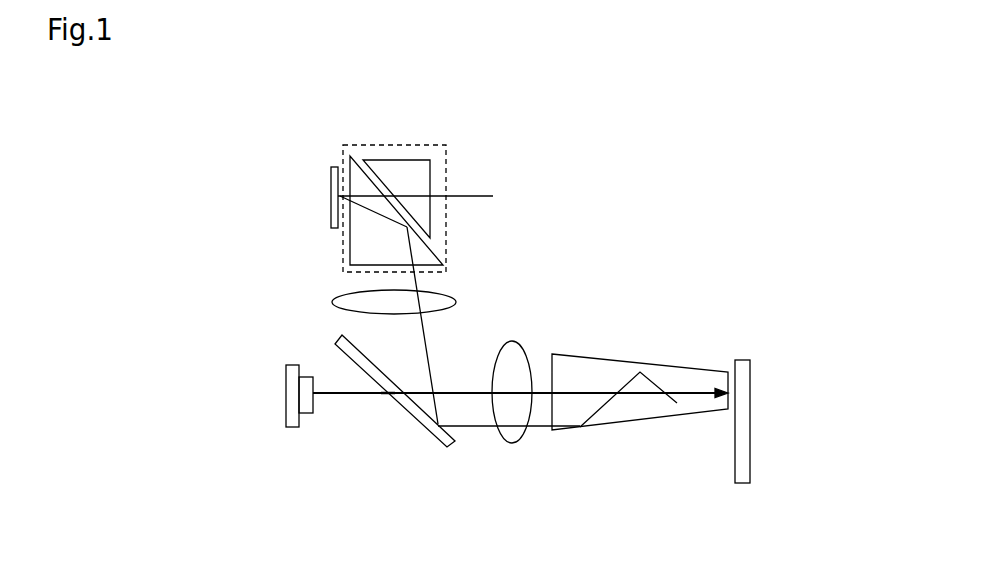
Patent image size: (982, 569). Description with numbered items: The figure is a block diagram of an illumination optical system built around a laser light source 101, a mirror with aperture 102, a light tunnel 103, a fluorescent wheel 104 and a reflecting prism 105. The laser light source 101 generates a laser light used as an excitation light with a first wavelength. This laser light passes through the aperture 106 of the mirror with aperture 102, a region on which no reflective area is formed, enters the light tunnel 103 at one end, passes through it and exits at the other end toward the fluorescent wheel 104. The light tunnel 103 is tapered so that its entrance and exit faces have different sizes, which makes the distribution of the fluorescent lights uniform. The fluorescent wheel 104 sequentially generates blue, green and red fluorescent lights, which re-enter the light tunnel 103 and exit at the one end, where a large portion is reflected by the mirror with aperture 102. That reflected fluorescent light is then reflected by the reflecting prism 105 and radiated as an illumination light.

The laser light source 101 is at (293, 367).
The mirror with aperture 102 is at (430, 443).
The light tunnel 103 is at (580, 367).
The fluorescent wheel 104 is at (743, 360).
The reflecting prism 105 is at (380, 155).
The aperture 106 is at (395, 398).